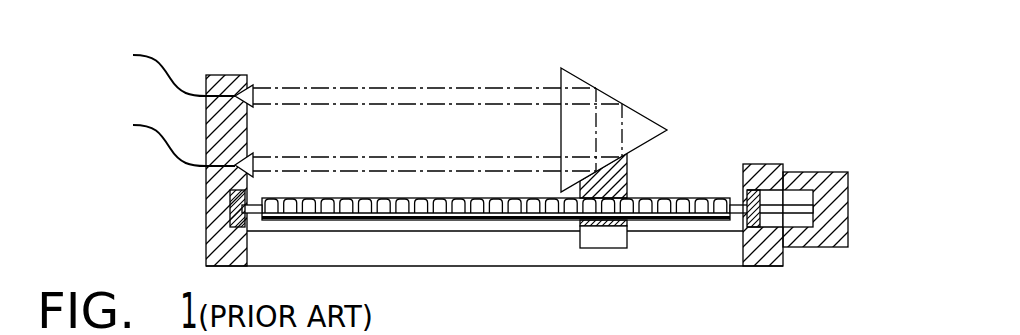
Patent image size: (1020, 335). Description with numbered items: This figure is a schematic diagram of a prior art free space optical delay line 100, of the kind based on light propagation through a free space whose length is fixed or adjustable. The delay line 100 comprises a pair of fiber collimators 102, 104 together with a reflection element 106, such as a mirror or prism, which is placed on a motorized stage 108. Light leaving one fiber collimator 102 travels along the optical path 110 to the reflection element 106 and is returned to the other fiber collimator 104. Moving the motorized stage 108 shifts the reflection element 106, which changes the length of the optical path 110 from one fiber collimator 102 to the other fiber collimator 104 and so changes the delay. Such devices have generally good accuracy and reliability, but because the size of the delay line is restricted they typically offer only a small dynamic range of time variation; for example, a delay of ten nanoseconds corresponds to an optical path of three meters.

The delay line 100 is at (652, 58).
The fiber collimator 102 is at (253, 84).
The fiber collimator 104 is at (255, 152).
The reflection element 106 is at (640, 114).
The motorized stage 108 is at (601, 240).
The optical path 110 is at (397, 86).